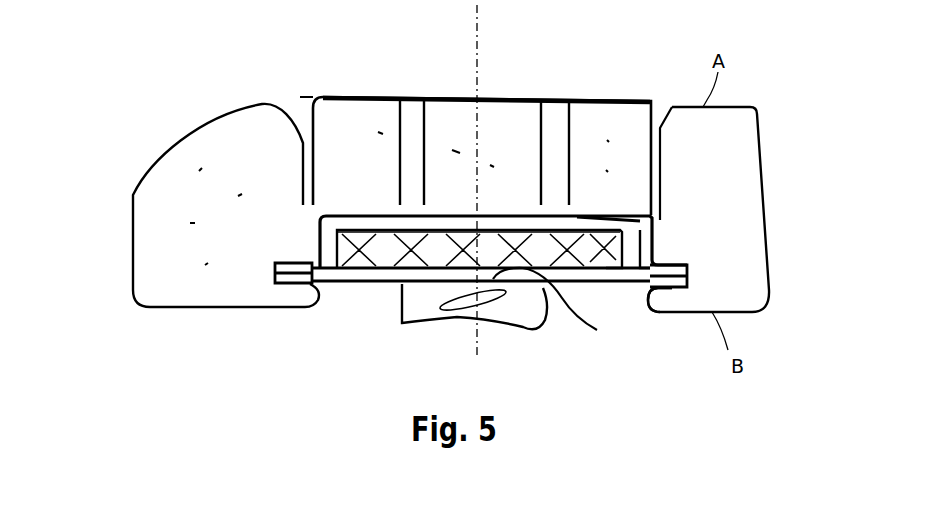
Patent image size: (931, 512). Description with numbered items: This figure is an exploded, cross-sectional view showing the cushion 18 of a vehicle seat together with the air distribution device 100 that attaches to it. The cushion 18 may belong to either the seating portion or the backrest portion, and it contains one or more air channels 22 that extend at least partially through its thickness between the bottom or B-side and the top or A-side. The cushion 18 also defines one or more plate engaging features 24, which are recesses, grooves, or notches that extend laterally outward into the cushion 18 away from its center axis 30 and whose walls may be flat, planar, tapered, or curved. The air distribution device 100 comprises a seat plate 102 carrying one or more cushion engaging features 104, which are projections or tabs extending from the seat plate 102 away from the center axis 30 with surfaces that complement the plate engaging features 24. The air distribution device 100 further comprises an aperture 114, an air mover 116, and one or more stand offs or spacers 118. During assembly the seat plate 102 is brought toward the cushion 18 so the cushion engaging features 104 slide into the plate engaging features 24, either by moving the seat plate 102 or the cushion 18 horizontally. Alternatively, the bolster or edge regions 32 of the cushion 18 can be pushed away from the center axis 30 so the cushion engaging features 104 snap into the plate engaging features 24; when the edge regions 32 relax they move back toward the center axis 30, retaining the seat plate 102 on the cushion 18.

The cushion 18 is at (106, 186).
The air channels 22 is at (413, 108).
The plate engaging features 24 is at (274, 269).
The center axis 30 is at (478, 26).
The bolster or edge regions 32 is at (200, 153).
The air distribution device 100 is at (300, 357).
The seat plate 102 is at (390, 288).
The cushion engaging features 104 is at (303, 282).
The aperture 114 is at (567, 305).
The air mover 116 is at (535, 333).
The stand offs or spacers 118 is at (377, 238).